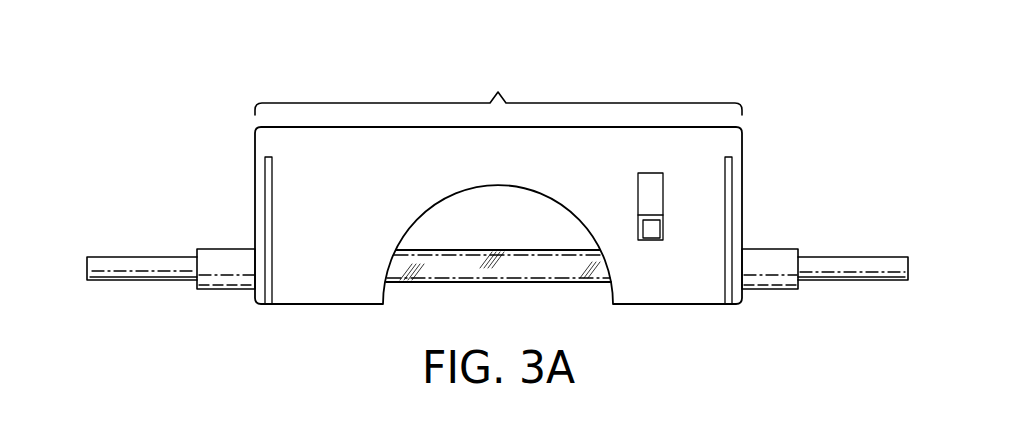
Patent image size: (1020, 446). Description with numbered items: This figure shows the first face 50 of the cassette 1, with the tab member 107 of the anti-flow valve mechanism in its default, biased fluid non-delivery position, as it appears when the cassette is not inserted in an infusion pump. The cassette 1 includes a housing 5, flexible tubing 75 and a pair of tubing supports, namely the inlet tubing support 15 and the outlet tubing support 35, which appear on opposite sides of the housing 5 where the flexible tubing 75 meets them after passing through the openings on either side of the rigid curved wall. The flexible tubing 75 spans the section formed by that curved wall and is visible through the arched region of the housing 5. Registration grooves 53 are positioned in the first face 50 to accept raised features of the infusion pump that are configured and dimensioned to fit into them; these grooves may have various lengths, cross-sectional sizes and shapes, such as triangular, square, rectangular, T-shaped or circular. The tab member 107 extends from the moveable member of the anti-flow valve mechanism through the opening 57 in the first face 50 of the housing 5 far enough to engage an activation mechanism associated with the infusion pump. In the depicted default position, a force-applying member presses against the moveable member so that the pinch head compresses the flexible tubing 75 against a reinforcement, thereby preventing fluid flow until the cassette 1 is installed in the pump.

The cassette 1 is at (767, 122).
The housing 5 is at (498, 92).
The inlet tubing support 15 is at (790, 284).
The outlet tubing support 35 is at (210, 284).
The first face 50 is at (344, 190).
The registration grooves 53 is at (265, 171).
The opening 57 is at (656, 173).
The flexible tubing 75 is at (497, 283).
The tab member 107 is at (650, 236).